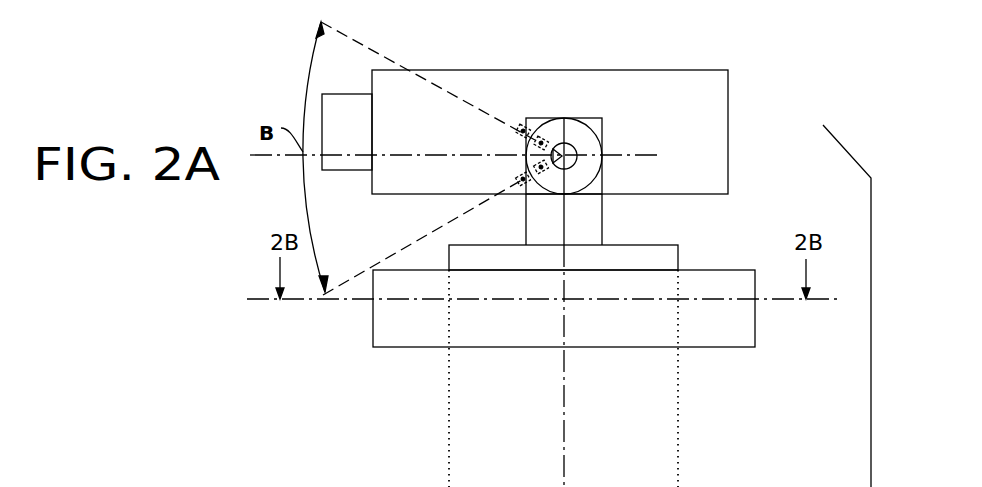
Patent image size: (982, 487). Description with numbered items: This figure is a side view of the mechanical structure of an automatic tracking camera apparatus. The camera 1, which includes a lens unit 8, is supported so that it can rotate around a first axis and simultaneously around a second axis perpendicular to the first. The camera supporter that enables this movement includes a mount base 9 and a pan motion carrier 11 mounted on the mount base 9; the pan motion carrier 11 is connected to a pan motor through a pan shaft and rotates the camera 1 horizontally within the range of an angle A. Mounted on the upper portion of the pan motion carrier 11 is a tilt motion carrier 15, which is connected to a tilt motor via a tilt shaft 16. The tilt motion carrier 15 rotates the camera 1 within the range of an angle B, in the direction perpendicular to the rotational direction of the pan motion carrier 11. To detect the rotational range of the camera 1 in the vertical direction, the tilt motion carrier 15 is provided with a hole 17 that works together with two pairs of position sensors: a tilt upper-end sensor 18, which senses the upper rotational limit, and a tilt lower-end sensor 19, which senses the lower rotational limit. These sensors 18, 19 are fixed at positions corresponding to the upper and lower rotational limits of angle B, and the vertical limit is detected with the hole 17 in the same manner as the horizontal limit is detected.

The camera 1 is at (728, 100).
The lens unit 8 is at (344, 94).
The mount base 9 is at (373, 323).
The pan motion carrier 11 is at (678, 250).
The tilt motion carrier 15 is at (577, 150).
The tilt shaft 16 is at (615, 173).
The hole 17 is at (525, 153).
The tilt upper-end (TUE) sensor 18 is at (541, 140).
The tilt lower-end (TLE) sensor 19 is at (523, 177).